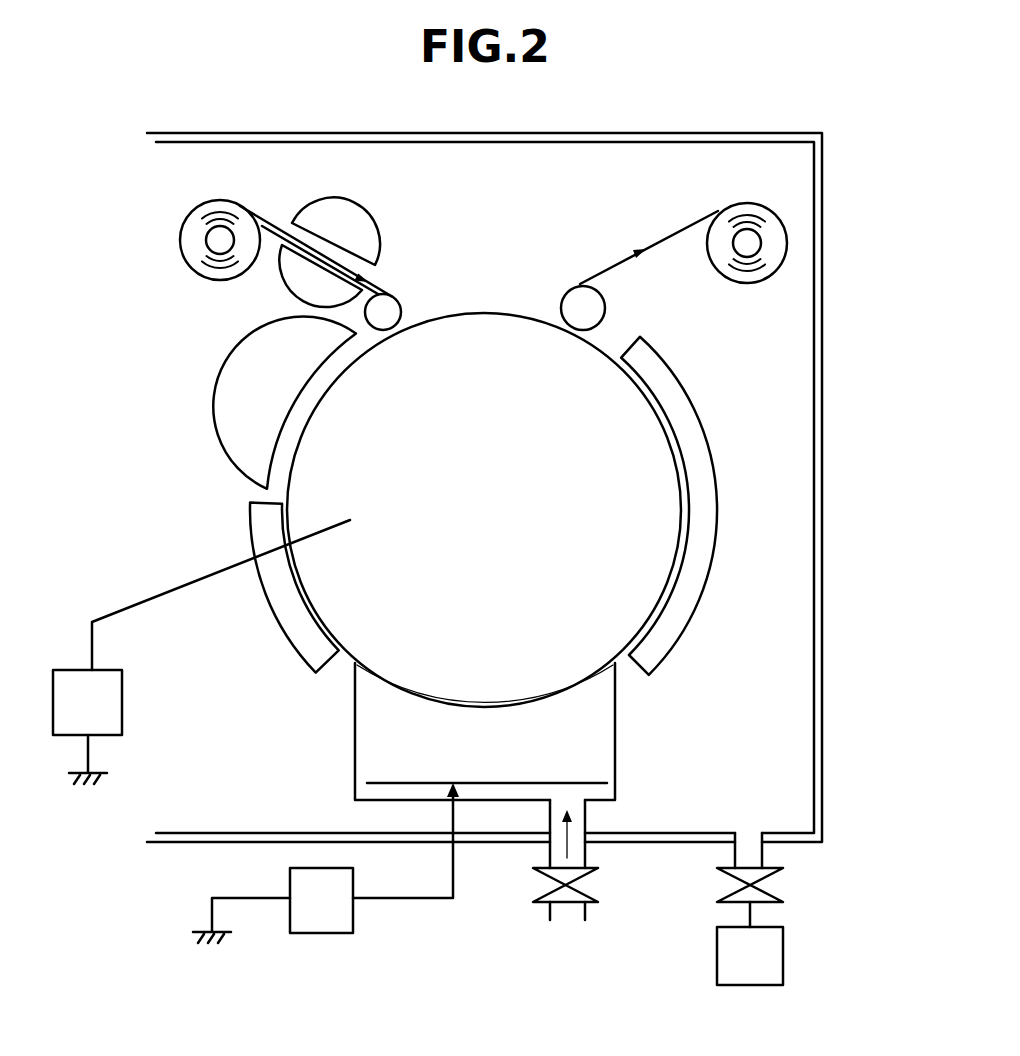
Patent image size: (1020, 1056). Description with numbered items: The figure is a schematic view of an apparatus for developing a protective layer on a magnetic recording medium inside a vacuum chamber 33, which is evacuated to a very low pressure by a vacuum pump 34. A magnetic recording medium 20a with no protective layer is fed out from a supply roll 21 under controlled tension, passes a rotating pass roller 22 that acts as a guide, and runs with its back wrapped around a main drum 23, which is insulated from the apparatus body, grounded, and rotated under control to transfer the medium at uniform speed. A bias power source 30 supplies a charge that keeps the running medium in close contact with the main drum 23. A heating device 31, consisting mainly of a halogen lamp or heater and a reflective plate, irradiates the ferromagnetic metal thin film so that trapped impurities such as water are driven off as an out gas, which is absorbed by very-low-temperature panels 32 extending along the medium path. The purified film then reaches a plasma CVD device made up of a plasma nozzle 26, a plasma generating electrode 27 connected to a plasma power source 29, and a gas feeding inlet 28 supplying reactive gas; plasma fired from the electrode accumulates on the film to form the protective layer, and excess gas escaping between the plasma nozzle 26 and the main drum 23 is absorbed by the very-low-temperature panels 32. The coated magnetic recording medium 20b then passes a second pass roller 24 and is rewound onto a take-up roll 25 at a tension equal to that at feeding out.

The magnetic recording medium with no protective layer 20a is at (280, 222).
The magnetic recording medium coated with protective layer 20b is at (660, 240).
The supply roll 21 is at (221, 238).
The pass roller 22 is at (386, 308).
The main drum 23 is at (481, 321).
The pass roller 24 is at (568, 300).
The take-up roll 25 is at (743, 244).
The plasma nozzle 26 is at (617, 715).
The plasma generating electrode 27 is at (389, 781).
The gas feeding inlet 28 is at (585, 915).
The plasma power source 29 is at (310, 934).
The bias power source 30 is at (72, 678).
The heating device 31 is at (353, 228).
The very-low-temperature panels 32 is at (703, 458).
The vacuum chamber 33 is at (820, 510).
The vacuum pump 34 is at (783, 953).